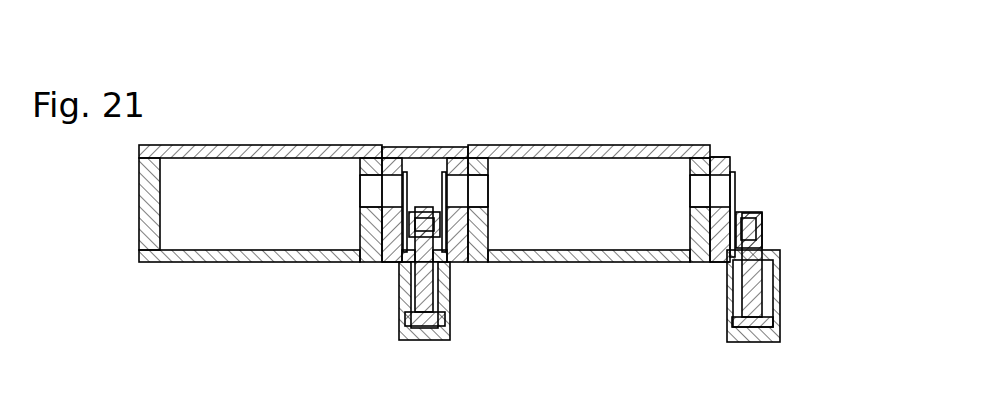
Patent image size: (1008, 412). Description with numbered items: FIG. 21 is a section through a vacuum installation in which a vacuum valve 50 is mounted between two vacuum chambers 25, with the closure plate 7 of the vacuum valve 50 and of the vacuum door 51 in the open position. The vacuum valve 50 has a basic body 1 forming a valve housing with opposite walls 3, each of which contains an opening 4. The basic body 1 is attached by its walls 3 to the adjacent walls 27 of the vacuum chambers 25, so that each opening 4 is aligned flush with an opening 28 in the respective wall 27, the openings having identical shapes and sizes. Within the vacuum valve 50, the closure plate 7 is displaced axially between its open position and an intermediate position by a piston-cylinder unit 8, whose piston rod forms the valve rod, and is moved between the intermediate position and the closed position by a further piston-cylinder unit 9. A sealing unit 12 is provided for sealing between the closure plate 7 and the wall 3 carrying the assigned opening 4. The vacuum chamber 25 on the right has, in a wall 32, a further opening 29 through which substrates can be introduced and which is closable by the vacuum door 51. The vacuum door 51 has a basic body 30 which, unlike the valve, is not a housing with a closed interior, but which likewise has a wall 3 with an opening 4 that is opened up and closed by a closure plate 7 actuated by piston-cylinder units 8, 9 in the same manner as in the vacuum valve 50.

The basic body 1 is at (383, 268).
The wall 3 is at (387, 237).
The opening 4 is at (723, 193).
The closure plate 7 is at (735, 213).
The piston-cylinder unit 8 is at (785, 315).
The piston-cylinder unit 9 is at (755, 232).
The sealing unit 12 is at (738, 167).
The vacuum chamber 25 is at (261, 133).
The wall 27 is at (478, 165).
The opening 28 is at (368, 193).
The opening 29 is at (698, 190).
The basic body 30 is at (715, 272).
The wall 32 is at (697, 223).
The vacuum valve 50 is at (435, 133).
The vacuum door 51 is at (739, 133).